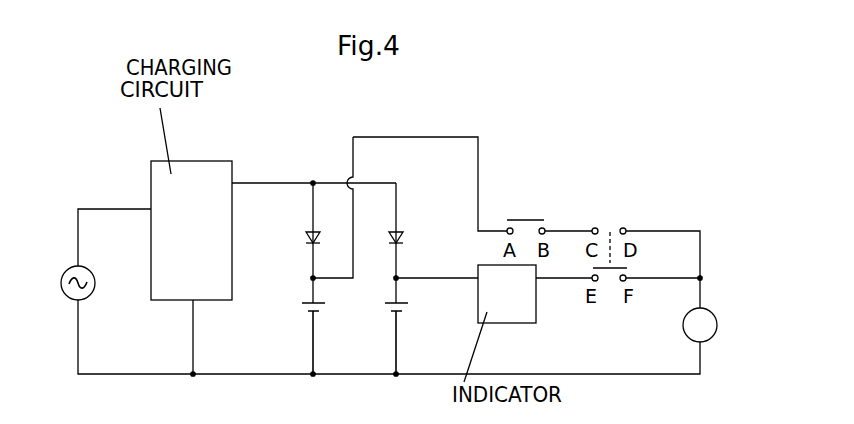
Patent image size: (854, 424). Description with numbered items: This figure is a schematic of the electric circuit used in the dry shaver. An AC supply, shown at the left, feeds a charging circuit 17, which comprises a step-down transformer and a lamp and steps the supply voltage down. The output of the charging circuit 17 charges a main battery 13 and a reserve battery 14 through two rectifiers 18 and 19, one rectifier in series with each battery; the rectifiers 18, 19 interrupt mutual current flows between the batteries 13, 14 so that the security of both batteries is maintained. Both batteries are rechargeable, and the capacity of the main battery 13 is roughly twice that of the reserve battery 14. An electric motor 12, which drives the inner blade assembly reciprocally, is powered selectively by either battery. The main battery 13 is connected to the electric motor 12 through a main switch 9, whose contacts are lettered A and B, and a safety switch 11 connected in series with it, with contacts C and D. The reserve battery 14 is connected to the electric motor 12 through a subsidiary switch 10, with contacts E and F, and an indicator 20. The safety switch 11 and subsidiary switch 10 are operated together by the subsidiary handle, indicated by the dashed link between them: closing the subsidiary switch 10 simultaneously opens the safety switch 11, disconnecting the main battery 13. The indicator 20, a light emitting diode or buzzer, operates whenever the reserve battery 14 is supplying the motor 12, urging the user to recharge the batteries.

The main switch 9 is at (527, 220).
The subsidiary switch 10 is at (614, 276).
The safety switch 11 is at (610, 232).
The electric motor 12 is at (711, 338).
The main battery 13 is at (305, 306).
The reserve battery 14 is at (403, 306).
The charging circuit 17 is at (203, 167).
The rectifier 18 is at (305, 237).
The rectifier 19 is at (406, 237).
The indicator 20 is at (517, 312).